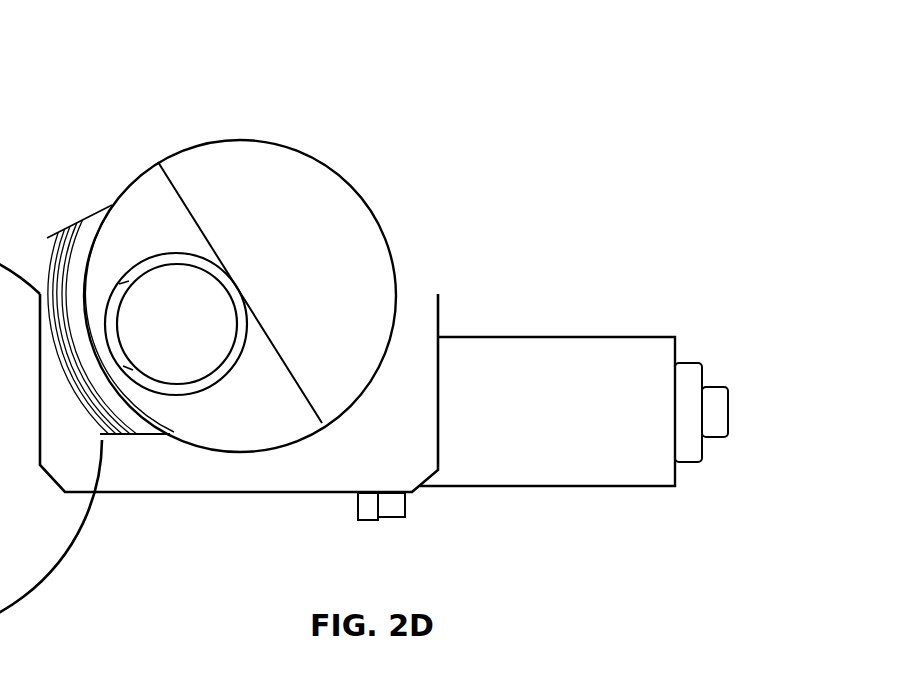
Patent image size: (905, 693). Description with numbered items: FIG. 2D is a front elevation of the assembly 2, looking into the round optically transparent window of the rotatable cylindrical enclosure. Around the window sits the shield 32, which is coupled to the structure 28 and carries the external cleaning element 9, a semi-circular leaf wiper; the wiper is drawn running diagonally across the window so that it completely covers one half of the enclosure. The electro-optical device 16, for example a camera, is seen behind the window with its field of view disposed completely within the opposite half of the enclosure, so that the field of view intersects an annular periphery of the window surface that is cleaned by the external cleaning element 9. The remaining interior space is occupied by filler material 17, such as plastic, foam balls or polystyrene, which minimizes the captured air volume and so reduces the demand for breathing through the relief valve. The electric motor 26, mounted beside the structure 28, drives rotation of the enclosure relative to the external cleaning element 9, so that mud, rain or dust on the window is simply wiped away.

The assembly 2 is at (292, 83).
The external cleaning element 9 is at (222, 240).
The electro-optical device 16 is at (165, 353).
The filler material 17 is at (242, 398).
The electric motor 26 is at (573, 365).
The structure 28 is at (412, 463).
The shield 32 is at (140, 137).